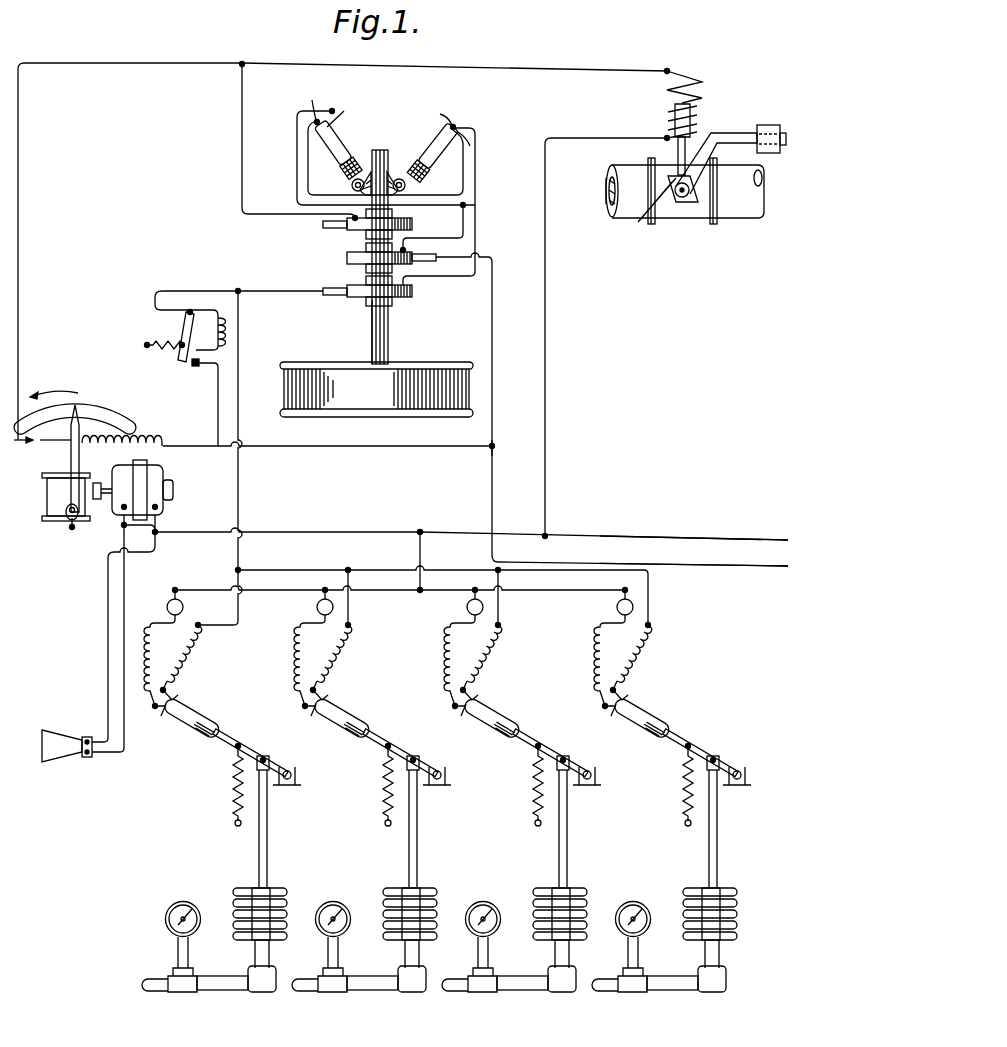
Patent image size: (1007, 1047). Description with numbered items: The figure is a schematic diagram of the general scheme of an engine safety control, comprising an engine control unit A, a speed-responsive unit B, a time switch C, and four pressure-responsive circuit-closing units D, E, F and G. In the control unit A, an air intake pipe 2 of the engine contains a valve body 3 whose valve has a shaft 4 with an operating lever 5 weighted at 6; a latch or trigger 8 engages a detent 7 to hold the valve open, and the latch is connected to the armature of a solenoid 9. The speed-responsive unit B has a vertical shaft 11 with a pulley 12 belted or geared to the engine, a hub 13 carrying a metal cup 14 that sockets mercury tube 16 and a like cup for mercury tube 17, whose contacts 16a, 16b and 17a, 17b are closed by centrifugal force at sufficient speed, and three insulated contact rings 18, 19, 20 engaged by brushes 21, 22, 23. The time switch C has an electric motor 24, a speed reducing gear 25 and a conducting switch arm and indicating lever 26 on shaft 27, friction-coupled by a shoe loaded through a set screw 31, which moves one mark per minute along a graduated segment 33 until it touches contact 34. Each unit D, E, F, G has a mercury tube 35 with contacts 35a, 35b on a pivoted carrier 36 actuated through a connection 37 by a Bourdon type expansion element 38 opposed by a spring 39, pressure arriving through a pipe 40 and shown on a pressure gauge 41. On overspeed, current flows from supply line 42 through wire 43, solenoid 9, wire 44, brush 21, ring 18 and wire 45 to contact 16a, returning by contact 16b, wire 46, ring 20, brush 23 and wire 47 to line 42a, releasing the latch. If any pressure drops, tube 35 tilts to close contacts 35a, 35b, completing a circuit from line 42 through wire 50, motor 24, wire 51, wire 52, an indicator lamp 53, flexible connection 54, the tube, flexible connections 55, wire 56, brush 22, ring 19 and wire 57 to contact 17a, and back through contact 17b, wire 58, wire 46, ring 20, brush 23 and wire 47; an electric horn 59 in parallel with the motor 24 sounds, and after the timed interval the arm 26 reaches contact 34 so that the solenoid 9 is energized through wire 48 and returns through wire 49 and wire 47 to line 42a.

The air intake pipe 2 is at (606, 203).
The valve body 3 is at (666, 212).
The shaft 4 is at (684, 197).
The operating lever 5 is at (727, 136).
The weight 6 is at (768, 126).
The detent 7 is at (646, 220).
The latch or trigger 8 is at (676, 150).
The solenoid 9 is at (668, 97).
The engine control unit A is at (738, 210).
The speed-responsive unit B is at (380, 245).
The vertical shaft 11 is at (372, 334).
The pulley 12 is at (376, 389).
The hub 13 is at (388, 172).
The metal cup 14 is at (345, 176).
The mercury tube 16 is at (342, 146).
The mercury tube contact 16a is at (350, 111).
The mercury tube contact 16b is at (308, 101).
The mercury tube 17 is at (433, 152).
The mercury tube contact 17a is at (433, 116).
The mercury tube contact 17b is at (470, 146).
The contact ring 18 is at (409, 226).
The contact ring 19 is at (412, 291).
The contact ring 20 is at (347, 258).
The brush 21 is at (328, 228).
The brush 22 is at (334, 295).
The brush 23 is at (447, 255).
The electric motor 24 is at (160, 485).
The speed reducing gear 25 is at (47, 495).
The switch arm and indicating lever 26 is at (70, 462).
The shaft 27 is at (66, 520).
The set screw 31 is at (71, 529).
The graduated segment 33 is at (95, 403).
The contact 34 is at (55, 442).
The mercury tube 35 is at (196, 738).
The mercury tube contact 35a is at (418, 689).
The mercury tube contact 35b is at (375, 722).
The pivoted carrier 36 is at (258, 755).
The connection 37 is at (267, 856).
The Bourdon type expansion element 38 is at (286, 905).
The spring 39 is at (233, 799).
The pipe 40 is at (254, 957).
The pressure gauge 41 is at (166, 928).
The current supply line 42 is at (712, 530).
The current supply line 42a is at (745, 566).
The wire 43 is at (546, 328).
The wire 44 is at (563, 71).
The wire 45 is at (296, 170).
The wire 46 is at (440, 246).
The wire 47 is at (493, 368).
The wire 48 is at (18, 258).
The wire 49 is at (160, 443).
The wire 50 is at (304, 530).
The wire 51 is at (125, 575).
The wire 52 is at (413, 588).
The indicator lamp 53 is at (167, 608).
The flexible connection 54 is at (145, 652).
The flexible connections 55 is at (186, 655).
The wire 56 is at (239, 490).
The wire 57 is at (476, 185).
The wire 58 is at (410, 188).
The electric horn 59 is at (64, 738).
The pressure-responsive circuit-closing unit D is at (205, 714).
The pressure-responsive circuit-closing unit E is at (355, 714).
The pressure-responsive circuit-closing unit F is at (505, 714).
The pressure-responsive circuit-closing unit G is at (655, 714).